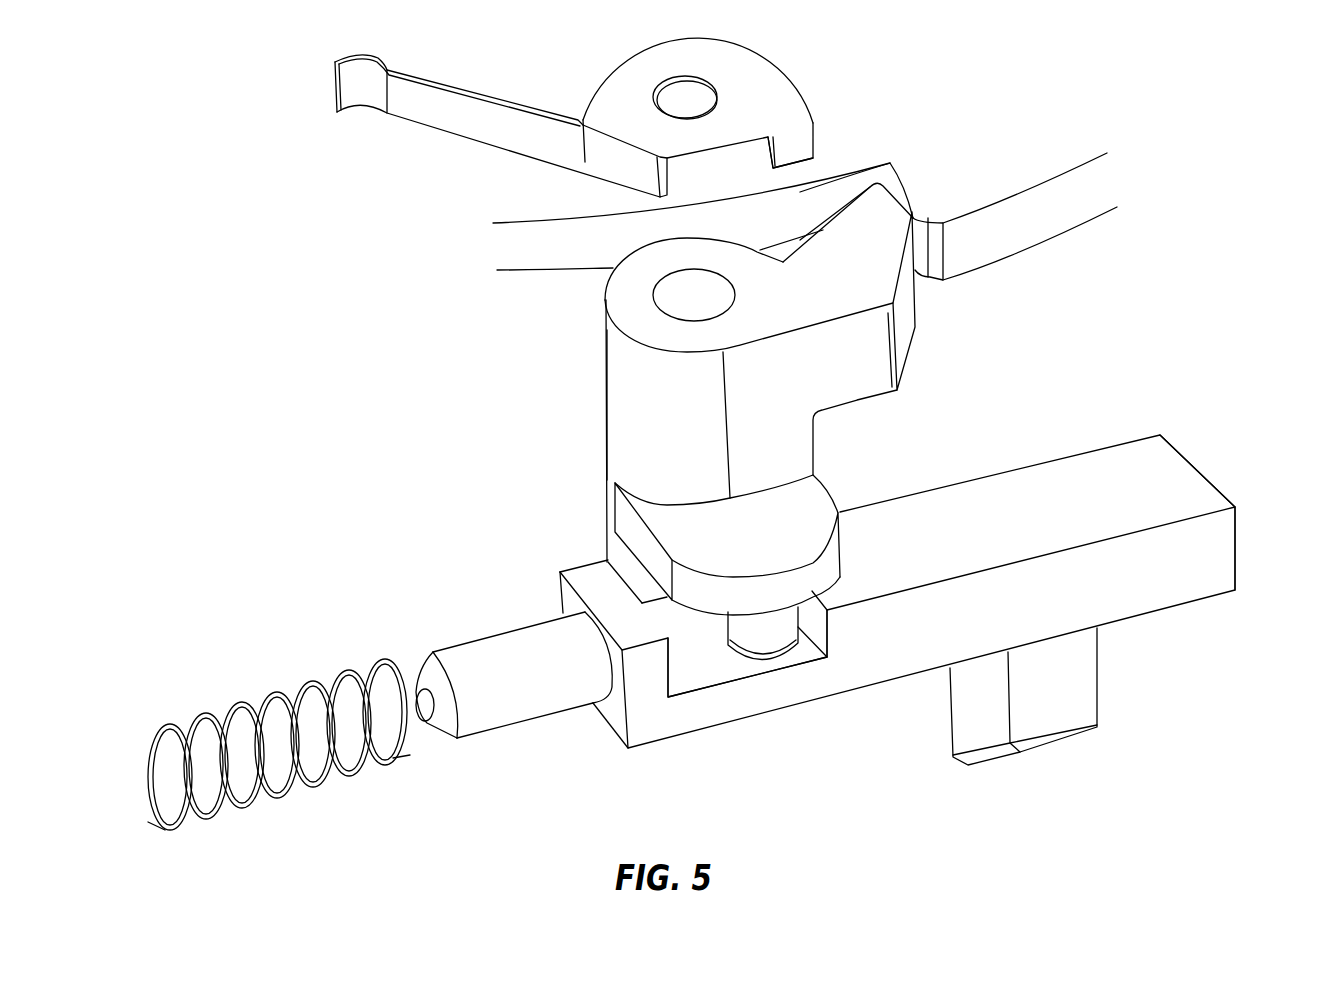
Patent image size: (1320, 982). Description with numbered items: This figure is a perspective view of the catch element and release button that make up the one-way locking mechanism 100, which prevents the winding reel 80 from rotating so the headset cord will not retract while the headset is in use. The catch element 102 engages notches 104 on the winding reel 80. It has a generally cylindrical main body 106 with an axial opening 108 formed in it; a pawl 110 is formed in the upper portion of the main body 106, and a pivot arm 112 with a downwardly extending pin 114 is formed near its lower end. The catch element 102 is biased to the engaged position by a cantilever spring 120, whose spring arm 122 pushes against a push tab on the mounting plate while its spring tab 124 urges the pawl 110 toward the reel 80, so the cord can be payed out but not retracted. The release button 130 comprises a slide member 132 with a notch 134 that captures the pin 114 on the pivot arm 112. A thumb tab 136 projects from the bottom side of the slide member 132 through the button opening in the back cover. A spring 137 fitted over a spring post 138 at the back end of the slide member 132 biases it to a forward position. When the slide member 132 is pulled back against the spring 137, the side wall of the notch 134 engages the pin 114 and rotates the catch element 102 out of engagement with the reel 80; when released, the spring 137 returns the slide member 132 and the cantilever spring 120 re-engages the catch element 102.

The winding reel 80 is at (1033, 240).
The one-way locking mechanism 100 is at (406, 355).
The catch element 102 is at (600, 437).
The notches 104 is at (890, 162).
The main body 106 is at (638, 465).
The axial opening 108 is at (687, 293).
The pawl 110 is at (860, 280).
The pivot arm 112 is at (790, 505).
The pin 114 is at (770, 637).
The cantilever spring 120 is at (527, 97).
The spring arm 122 is at (500, 136).
The spring tab 124 is at (802, 143).
The release button 130 is at (1091, 443).
The slide member 132 is at (1212, 543).
The notch 134 is at (706, 666).
The thumb tab 136 is at (1068, 700).
The spring 137 is at (317, 780).
The spring post 138 is at (555, 693).